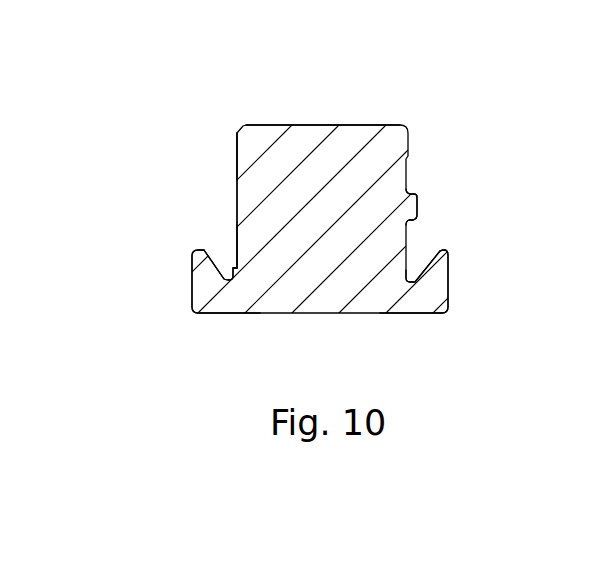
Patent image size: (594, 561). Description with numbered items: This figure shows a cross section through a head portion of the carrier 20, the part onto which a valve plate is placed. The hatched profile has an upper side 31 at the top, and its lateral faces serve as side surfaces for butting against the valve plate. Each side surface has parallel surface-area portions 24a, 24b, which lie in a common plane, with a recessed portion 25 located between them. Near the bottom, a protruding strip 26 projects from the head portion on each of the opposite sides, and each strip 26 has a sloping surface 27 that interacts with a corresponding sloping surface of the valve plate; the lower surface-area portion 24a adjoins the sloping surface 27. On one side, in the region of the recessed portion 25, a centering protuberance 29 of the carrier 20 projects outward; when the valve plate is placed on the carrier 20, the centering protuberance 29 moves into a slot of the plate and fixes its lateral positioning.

The carrier 20 is at (422, 132).
The surface-area portion 24a is at (235, 265).
The surface-area portion 24b is at (235, 146).
The recessed portion 25 is at (237, 198).
The protruding strip 26 is at (230, 303).
The sloping surface 27 is at (225, 252).
The centering protuberance 29 is at (417, 202).
The upper side 31 is at (328, 125).